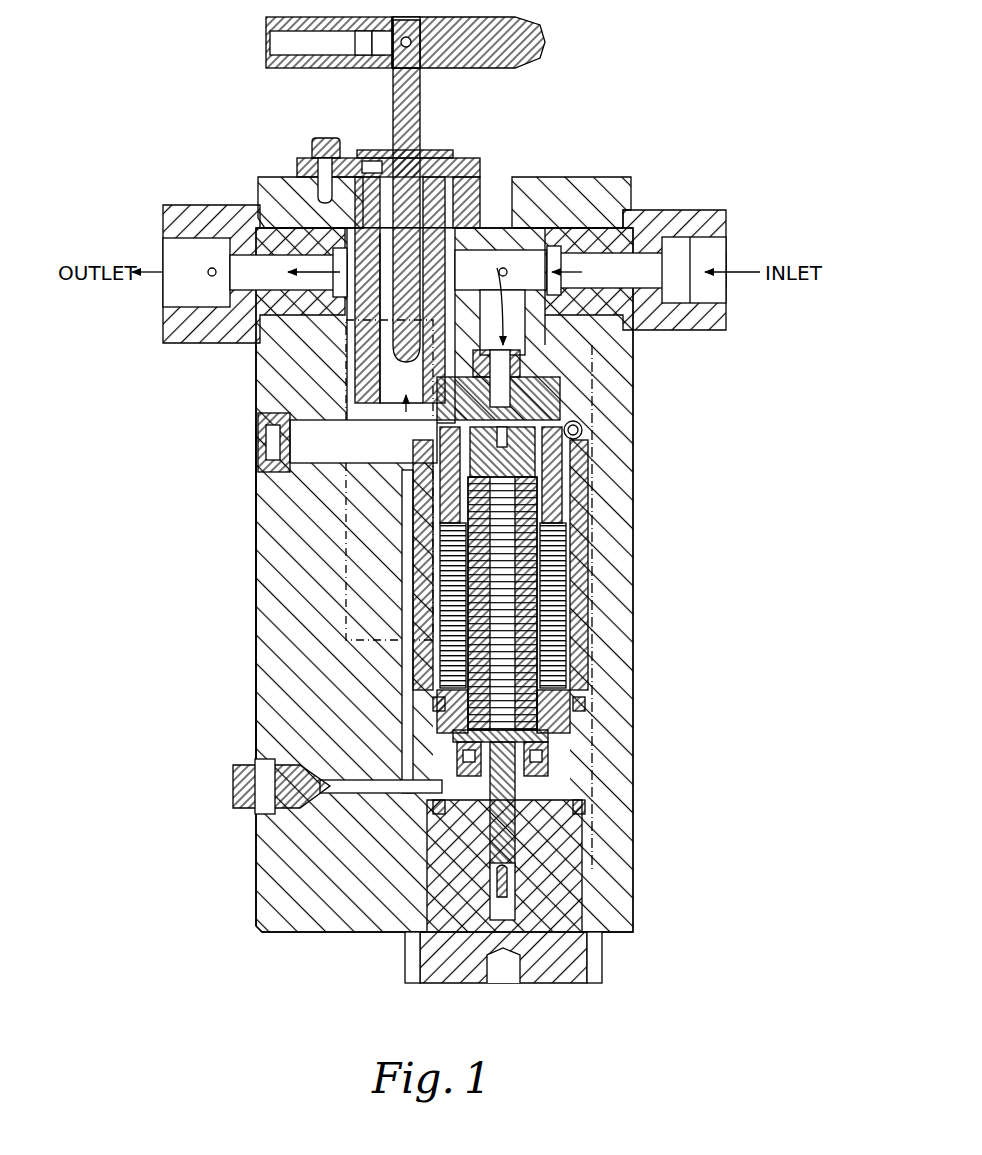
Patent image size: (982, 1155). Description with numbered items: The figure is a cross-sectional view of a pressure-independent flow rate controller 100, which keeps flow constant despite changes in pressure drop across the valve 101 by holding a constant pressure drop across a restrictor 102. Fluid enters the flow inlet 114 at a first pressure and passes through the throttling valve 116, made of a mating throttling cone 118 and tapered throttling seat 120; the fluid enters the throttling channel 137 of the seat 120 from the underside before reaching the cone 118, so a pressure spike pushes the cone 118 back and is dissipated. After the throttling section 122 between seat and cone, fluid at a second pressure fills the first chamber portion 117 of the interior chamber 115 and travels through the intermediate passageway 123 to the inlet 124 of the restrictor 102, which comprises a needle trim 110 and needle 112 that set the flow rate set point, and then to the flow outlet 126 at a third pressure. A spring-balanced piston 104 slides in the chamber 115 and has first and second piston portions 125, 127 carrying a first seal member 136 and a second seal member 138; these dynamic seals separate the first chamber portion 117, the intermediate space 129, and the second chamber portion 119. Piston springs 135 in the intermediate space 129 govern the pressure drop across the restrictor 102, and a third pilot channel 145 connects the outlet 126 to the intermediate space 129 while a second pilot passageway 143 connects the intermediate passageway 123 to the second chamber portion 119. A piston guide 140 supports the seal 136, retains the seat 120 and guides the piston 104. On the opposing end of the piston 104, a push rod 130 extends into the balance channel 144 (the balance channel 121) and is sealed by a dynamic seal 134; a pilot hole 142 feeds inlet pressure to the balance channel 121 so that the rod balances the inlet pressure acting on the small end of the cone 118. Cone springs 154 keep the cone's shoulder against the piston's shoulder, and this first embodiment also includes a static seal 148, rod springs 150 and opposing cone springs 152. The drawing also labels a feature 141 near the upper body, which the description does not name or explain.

The flow rate controller 100 is at (155, 52).
The valve 101 is at (181, 631).
The restrictor 102 is at (372, 355).
The piston 104 is at (590, 706).
The needle trim 110 is at (480, 178).
The needle 112 is at (528, 180).
The flow inlet 114 is at (728, 305).
The interior chamber 115 is at (578, 582).
The throttling valve 116 is at (430, 500).
The first chamber portion 117 is at (562, 462).
The throttling cone 118 is at (560, 400).
The second chamber portion 119 is at (570, 790).
The throttling seat 120 is at (512, 387).
The balance channel 121 is at (433, 830).
The throttling section 122 is at (400, 402).
The intermediate passageway 123 is at (275, 457).
The inlet of the needle restrictor 124 is at (445, 470).
The first piston portion 125 is at (568, 532).
The flow outlet 126 is at (165, 248).
The second piston portion 127 is at (575, 728).
The intermediate space 129 is at (575, 652).
The push rod 130 is at (590, 950).
The dynamic seal 134 is at (585, 895).
The piston springs 135 is at (585, 620).
The first seal member 136 is at (585, 485).
The throttling channel 137 is at (560, 350).
The second seal member 138 is at (585, 745).
The piston guide 140 is at (583, 432).
The bonnet flange 141 is at (642, 185).
The pilot hole 142 is at (585, 790).
The second pilot passageway 143 is at (415, 716).
The balance channel 144 is at (503, 897).
The third pilot channel 145 is at (346, 580).
The static seal 148 is at (556, 815).
The rod springs 150 is at (433, 822).
The opposing cone springs 152 is at (337, 445).
The cone springs 154 is at (600, 562).